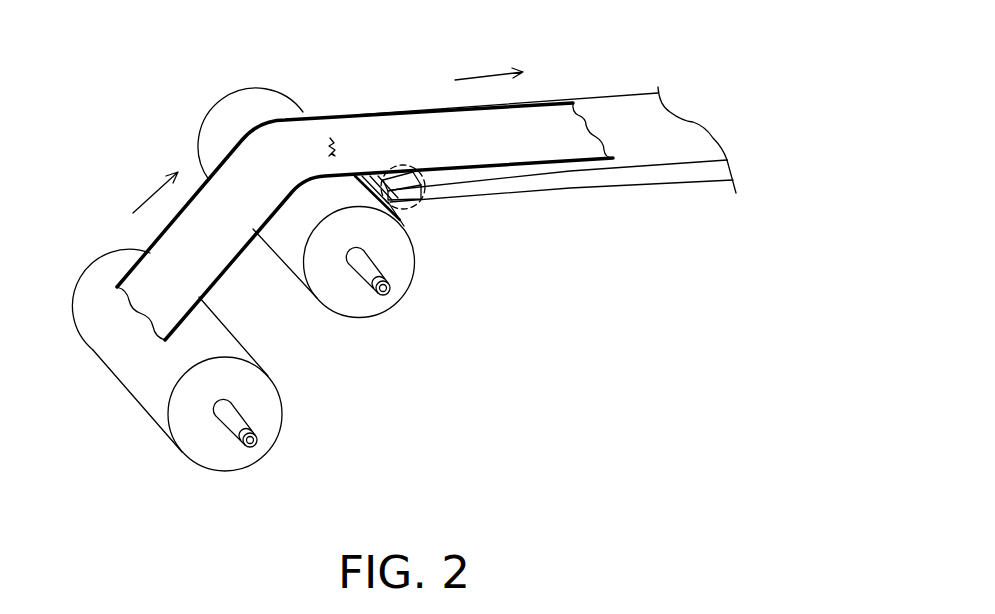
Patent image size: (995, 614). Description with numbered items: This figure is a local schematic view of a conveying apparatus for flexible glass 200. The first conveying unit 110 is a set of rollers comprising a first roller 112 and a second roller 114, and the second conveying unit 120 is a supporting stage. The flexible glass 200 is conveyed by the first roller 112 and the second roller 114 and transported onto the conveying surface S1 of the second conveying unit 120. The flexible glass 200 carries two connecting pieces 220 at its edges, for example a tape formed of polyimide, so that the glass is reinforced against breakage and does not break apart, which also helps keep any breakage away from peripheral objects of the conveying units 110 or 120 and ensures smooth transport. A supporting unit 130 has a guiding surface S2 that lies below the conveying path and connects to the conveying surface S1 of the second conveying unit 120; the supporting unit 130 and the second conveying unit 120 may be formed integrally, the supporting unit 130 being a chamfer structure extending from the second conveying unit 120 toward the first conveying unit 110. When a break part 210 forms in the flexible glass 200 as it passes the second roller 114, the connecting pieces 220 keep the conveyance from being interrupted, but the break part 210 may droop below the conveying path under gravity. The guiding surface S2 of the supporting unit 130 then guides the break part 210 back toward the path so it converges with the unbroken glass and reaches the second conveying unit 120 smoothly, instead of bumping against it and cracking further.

The first conveying unit 110 is at (257, 293).
The first roller 112 is at (270, 395).
The second roller 114 is at (357, 305).
The second conveying unit 120 is at (622, 178).
The supporting unit 130 is at (410, 208).
The flexible glass 200 is at (329, 187).
The break part 210 is at (337, 142).
The connecting pieces 220 is at (150, 237).
The conveying surface S1 is at (637, 111).
The guiding surface S2 is at (401, 164).